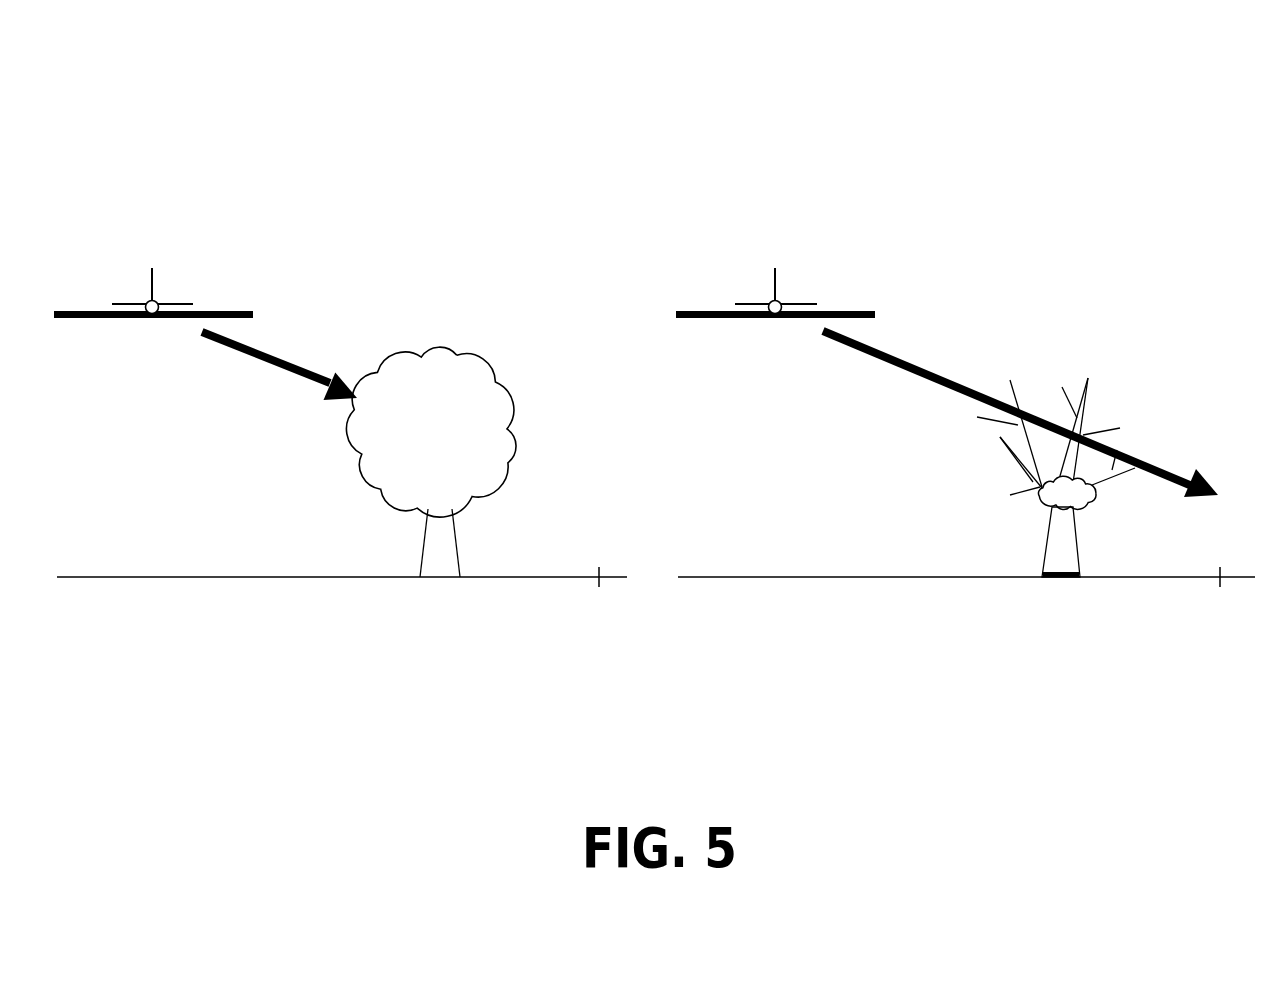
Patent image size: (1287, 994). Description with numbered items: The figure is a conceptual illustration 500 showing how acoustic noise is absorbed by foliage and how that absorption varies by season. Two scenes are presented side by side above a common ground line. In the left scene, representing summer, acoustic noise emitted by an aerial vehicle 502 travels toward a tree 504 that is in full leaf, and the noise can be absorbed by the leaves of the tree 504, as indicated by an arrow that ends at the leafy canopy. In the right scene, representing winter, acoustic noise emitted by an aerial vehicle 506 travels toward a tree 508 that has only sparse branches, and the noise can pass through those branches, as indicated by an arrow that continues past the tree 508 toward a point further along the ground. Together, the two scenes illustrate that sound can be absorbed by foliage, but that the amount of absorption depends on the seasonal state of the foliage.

The conceptual illustration 500 is at (1215, 128).
The aerial vehicle 502 is at (153, 290).
The tree 504 is at (493, 370).
The aerial vehicle 506 is at (776, 290).
The tree 508 is at (1088, 387).